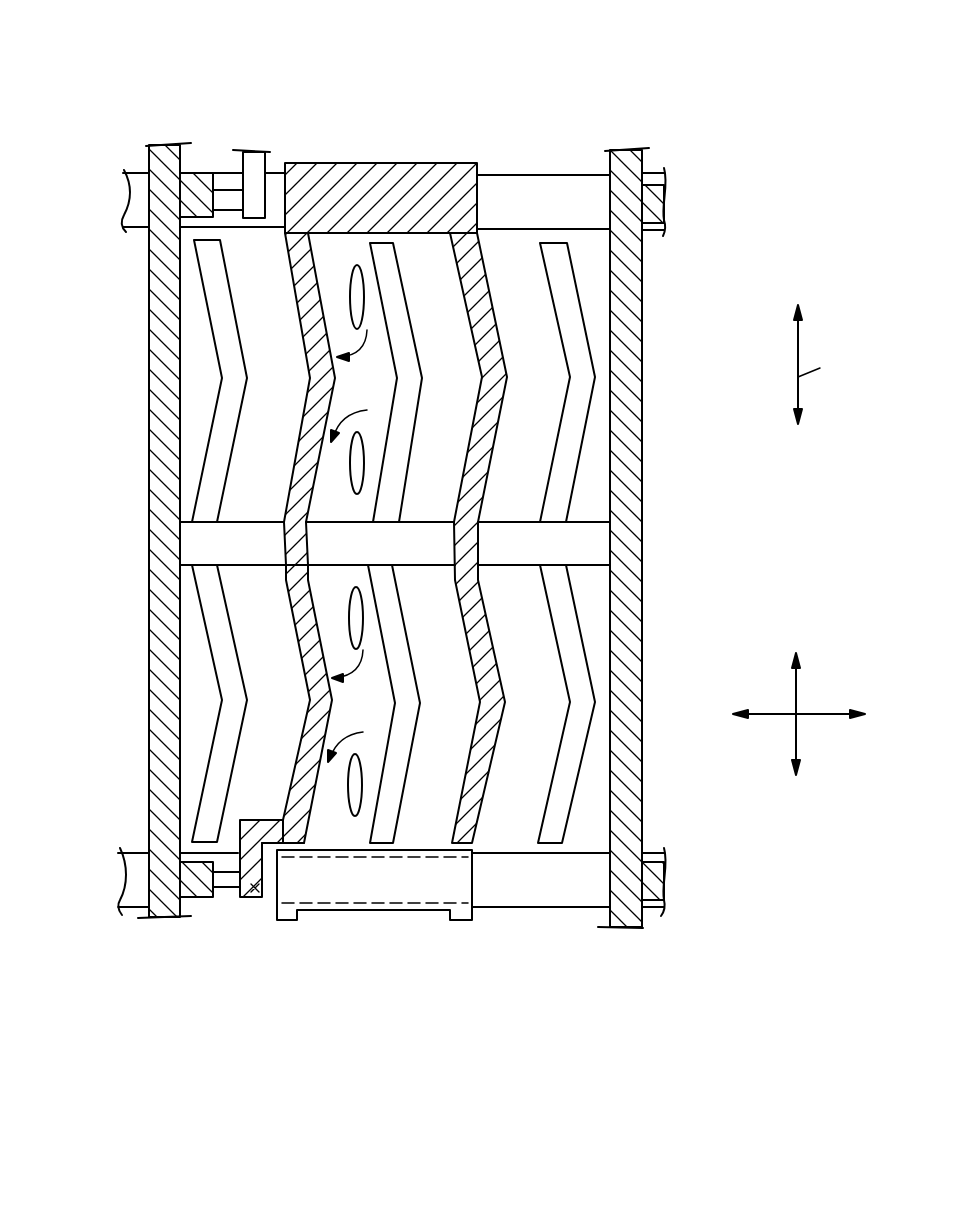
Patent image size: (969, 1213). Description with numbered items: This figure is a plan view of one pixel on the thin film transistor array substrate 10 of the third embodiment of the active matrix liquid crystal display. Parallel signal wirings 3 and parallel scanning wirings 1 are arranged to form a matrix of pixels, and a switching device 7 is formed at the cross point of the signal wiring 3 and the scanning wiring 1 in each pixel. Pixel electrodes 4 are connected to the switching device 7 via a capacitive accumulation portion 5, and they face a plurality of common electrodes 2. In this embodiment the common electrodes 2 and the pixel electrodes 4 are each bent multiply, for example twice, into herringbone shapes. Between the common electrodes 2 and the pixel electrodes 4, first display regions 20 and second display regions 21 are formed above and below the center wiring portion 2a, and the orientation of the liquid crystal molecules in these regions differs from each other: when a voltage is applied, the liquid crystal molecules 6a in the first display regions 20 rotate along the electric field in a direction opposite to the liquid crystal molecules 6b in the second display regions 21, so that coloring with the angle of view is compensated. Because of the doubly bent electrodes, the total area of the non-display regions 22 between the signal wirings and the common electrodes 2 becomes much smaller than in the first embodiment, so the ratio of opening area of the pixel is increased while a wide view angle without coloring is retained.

The array substrate 10 is at (202, 146).
The scanning wiring 1 is at (497, 208).
The common electrode 2 is at (393, 260).
The center wiring portion 2a is at (568, 548).
The signal wiring 3 is at (163, 913).
The pixel electrode 4 is at (255, 152).
The capacitive accumulation portion 5 is at (423, 175).
The liquid crystal molecules 6a is at (357, 265).
The liquid crystal molecules 6b is at (357, 463).
The switching device 7 is at (223, 912).
The first display region 20 is at (323, 262).
The second display region 21 is at (330, 493).
The non-display region 22 is at (190, 312).